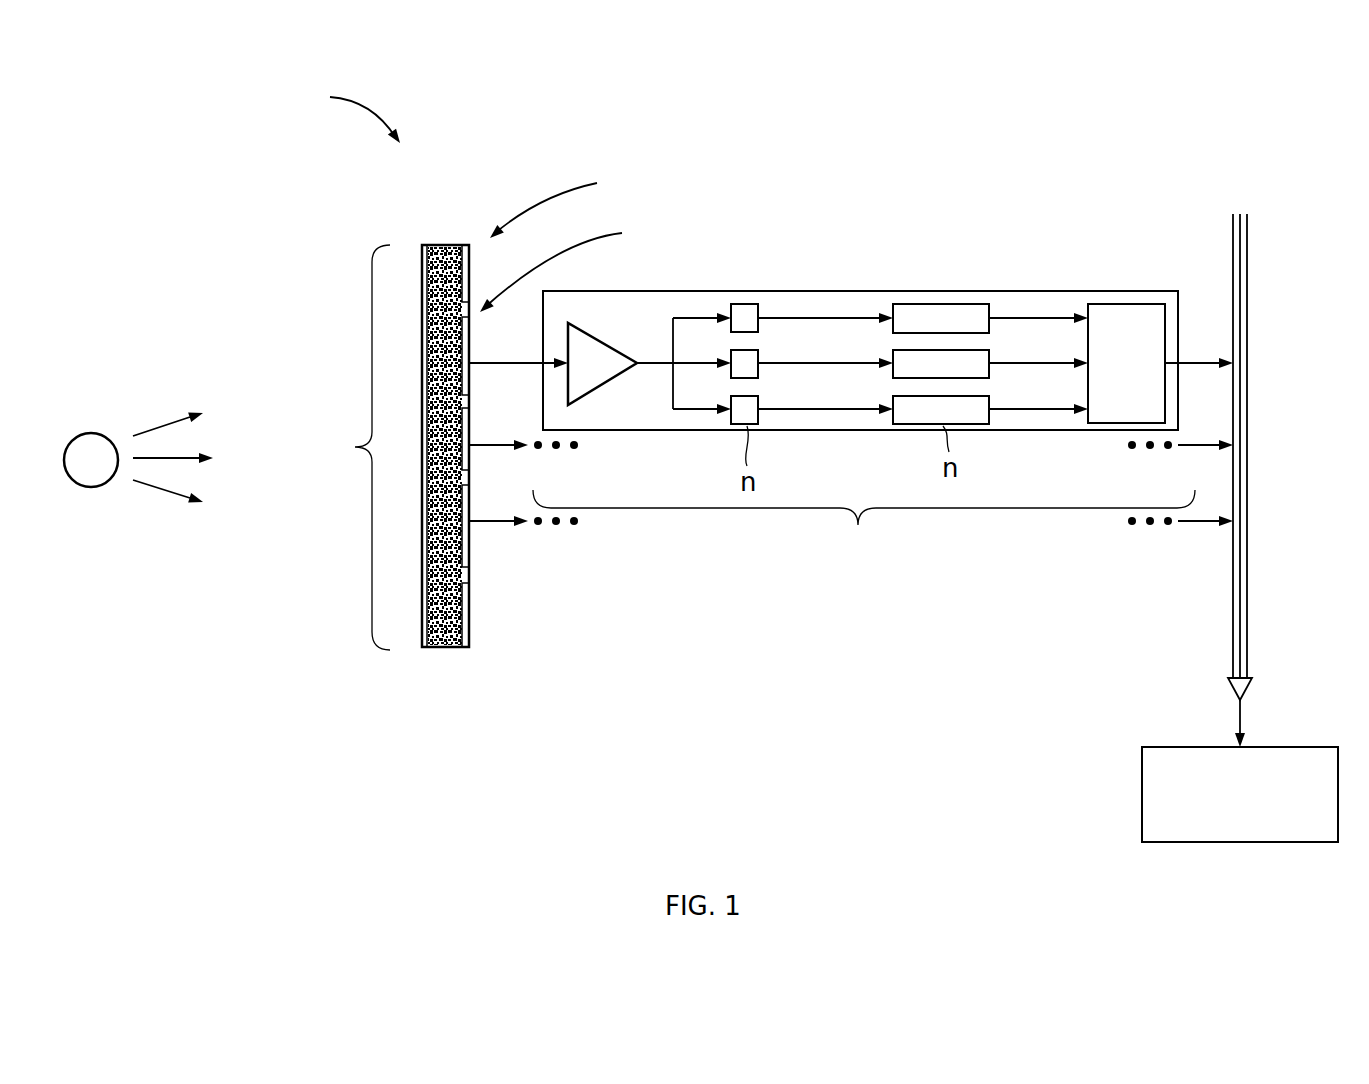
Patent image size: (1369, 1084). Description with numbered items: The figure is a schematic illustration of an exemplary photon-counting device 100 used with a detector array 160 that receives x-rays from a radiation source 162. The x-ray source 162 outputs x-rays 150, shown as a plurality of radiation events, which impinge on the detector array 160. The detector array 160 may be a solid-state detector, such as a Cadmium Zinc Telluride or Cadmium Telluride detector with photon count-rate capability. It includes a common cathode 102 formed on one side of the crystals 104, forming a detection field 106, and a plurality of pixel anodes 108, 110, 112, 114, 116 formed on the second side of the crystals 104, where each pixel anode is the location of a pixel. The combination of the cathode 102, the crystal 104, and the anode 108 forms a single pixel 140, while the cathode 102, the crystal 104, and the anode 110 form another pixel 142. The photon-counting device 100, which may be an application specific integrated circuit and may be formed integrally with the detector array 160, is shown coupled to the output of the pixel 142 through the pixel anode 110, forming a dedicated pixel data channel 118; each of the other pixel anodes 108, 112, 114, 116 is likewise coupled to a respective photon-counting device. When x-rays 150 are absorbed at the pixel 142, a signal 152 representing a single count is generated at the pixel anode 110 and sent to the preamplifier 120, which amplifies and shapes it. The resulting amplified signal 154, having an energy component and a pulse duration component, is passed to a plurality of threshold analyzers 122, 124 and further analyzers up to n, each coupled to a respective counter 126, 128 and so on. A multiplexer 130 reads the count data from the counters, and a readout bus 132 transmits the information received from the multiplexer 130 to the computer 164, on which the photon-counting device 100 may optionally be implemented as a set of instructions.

The photon-counting device 100 is at (829, 291).
The common cathode 102 is at (422, 250).
The crystals 104 is at (450, 245).
The detection field 106 is at (348, 447).
The pixel anode 108 is at (470, 287).
The pixel anode 110 is at (470, 357).
The pixel anode 112 is at (470, 462).
The pixel anode 114 is at (470, 547).
The pixel anode 116 is at (470, 612).
The pixel data channel 118 is at (864, 526).
The preamplifier 120 is at (613, 344).
The threshold analyzer 122 is at (742, 304).
The threshold analyzer 124 is at (760, 352).
The counter 126 is at (991, 327).
The counter 128 is at (991, 370).
The multiplexer 130 is at (1120, 304).
The readout bus 132 is at (1250, 305).
The pixel 140 is at (565, 198).
The pixel 142 is at (572, 262).
The x-rays 150 is at (162, 420).
The signal 152 is at (483, 366).
The amplified signal 154 is at (655, 368).
The detector array 160 is at (342, 114).
The radiation source 162 is at (96, 433).
The computer 164 is at (1308, 747).